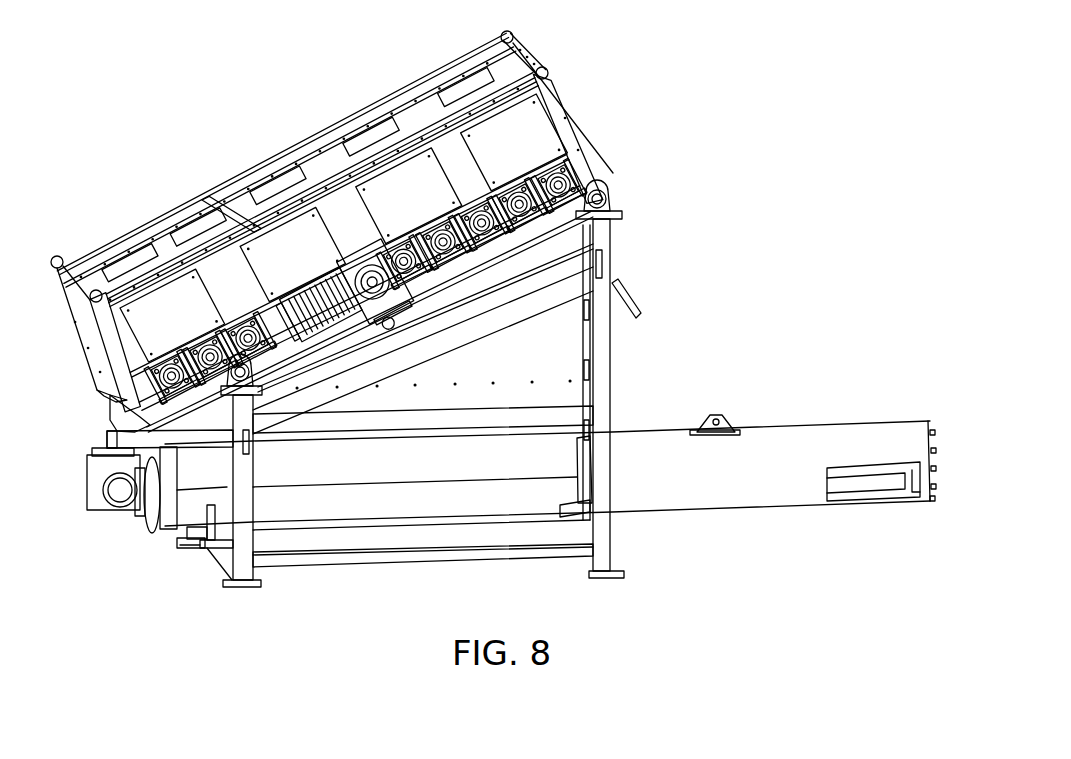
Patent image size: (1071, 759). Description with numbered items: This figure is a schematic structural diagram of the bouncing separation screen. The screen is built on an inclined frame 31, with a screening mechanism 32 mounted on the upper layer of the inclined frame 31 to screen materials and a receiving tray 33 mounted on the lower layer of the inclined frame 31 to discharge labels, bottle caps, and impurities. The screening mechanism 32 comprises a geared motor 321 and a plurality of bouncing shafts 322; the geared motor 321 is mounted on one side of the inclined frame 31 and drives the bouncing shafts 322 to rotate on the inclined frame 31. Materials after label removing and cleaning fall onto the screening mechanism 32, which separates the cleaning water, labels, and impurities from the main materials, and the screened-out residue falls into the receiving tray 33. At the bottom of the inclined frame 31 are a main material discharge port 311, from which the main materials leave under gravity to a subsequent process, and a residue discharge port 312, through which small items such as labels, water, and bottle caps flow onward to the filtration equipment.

The inclined frame 31 is at (222, 590).
The main material discharge port 311 is at (107, 390).
The residue discharge port 312 is at (115, 410).
The screening mechanism 32 is at (255, 50).
The geared motor 321 is at (307, 293).
The bouncing shafts 322 is at (212, 340).
The receiving tray 33 is at (438, 295).